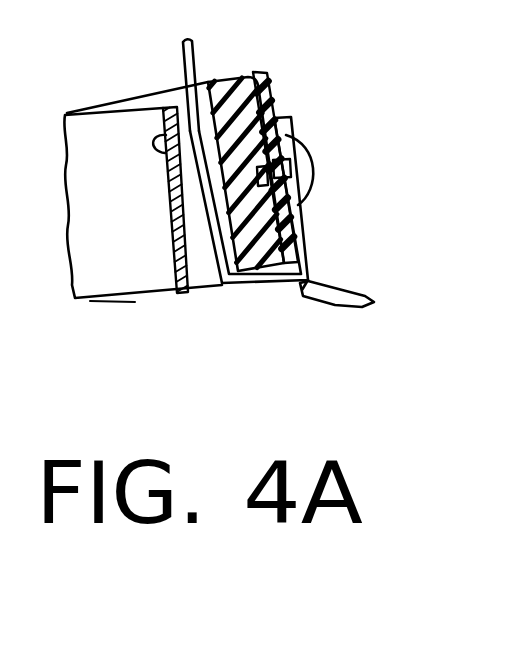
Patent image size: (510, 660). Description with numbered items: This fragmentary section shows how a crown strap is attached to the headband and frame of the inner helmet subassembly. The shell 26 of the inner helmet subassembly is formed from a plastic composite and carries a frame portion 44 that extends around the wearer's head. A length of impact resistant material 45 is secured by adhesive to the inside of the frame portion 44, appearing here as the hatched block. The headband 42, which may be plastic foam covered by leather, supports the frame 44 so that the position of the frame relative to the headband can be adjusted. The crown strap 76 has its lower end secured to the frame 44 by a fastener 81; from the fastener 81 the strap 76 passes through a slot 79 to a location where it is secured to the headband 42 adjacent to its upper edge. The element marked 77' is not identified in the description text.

The headband 42 is at (137, 258).
The frame portion 44 is at (263, 97).
The impact resistant material 45 is at (225, 83).
The crown strap 76 is at (181, 61).
The rack strip 77' is at (138, 200).
The slot 79 is at (305, 284).
The fastener 81 is at (307, 180).
The shell 26 is at (375, 298).